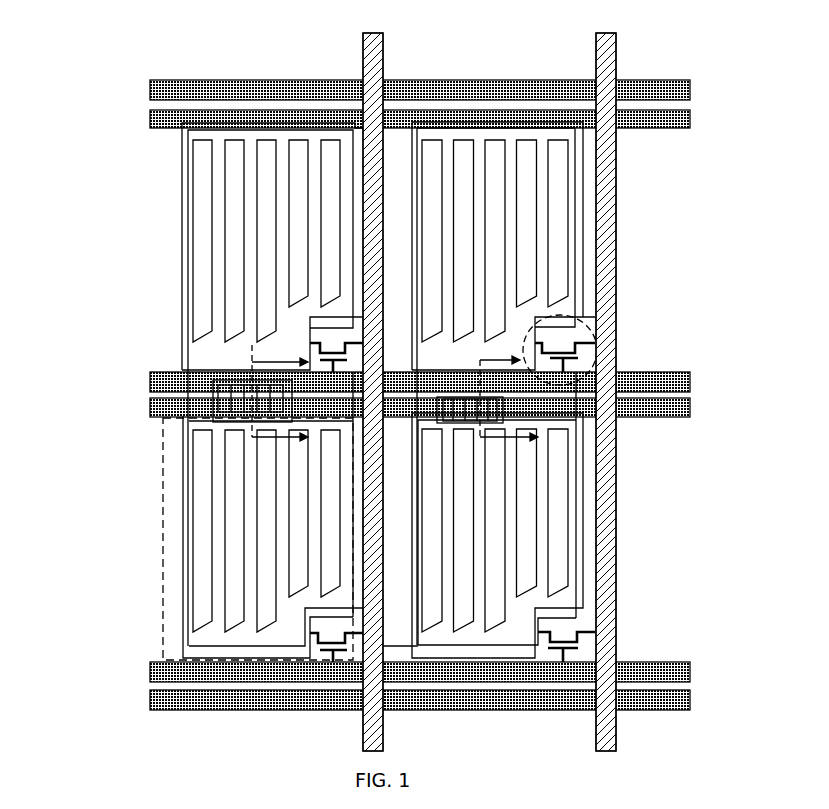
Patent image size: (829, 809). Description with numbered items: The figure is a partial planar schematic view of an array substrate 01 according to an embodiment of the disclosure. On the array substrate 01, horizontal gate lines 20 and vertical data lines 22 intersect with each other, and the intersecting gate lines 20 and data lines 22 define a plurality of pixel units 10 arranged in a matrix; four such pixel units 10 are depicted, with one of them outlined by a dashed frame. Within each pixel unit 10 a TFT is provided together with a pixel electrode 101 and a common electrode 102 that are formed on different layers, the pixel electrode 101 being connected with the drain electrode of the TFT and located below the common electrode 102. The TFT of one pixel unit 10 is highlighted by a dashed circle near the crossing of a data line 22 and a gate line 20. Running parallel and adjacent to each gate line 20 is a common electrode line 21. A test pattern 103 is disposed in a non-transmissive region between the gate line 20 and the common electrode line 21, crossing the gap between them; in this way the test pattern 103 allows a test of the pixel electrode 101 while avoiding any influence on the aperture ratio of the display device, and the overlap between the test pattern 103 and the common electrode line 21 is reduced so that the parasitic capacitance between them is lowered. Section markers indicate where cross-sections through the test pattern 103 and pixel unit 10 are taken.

The array substrate 01 is at (58, 25).
The pixel unit 10 is at (163, 540).
The pixel electrode 101 is at (182, 188).
The common electrode 102 is at (215, 237).
The test pattern 103 is at (237, 123).
The gate line 20 is at (150, 382).
The common electrode line 21 is at (150, 410).
The data line 22 is at (616, 236).
The thin film transistor TFT is at (597, 345).